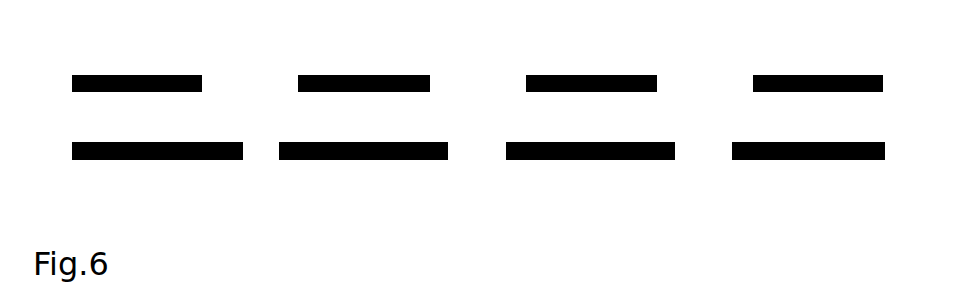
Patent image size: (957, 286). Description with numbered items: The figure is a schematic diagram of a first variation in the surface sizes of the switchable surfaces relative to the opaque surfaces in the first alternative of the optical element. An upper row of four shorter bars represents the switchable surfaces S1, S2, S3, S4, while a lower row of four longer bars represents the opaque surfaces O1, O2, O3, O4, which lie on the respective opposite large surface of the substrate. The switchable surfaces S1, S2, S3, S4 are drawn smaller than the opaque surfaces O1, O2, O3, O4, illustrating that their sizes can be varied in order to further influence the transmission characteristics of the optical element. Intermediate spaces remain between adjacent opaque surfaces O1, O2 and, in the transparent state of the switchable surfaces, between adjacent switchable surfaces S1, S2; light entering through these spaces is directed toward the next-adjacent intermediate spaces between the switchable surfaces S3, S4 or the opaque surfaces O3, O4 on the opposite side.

The switchable surface S1 is at (142, 75).
The switchable surface S2 is at (388, 75).
The switchable surface S3 is at (620, 75).
The switchable surface S4 is at (835, 75).
The opaque surface O1 is at (95, 160).
The opaque surface O2 is at (343, 160).
The opaque surface O3 is at (605, 160).
The opaque surface O4 is at (825, 160).